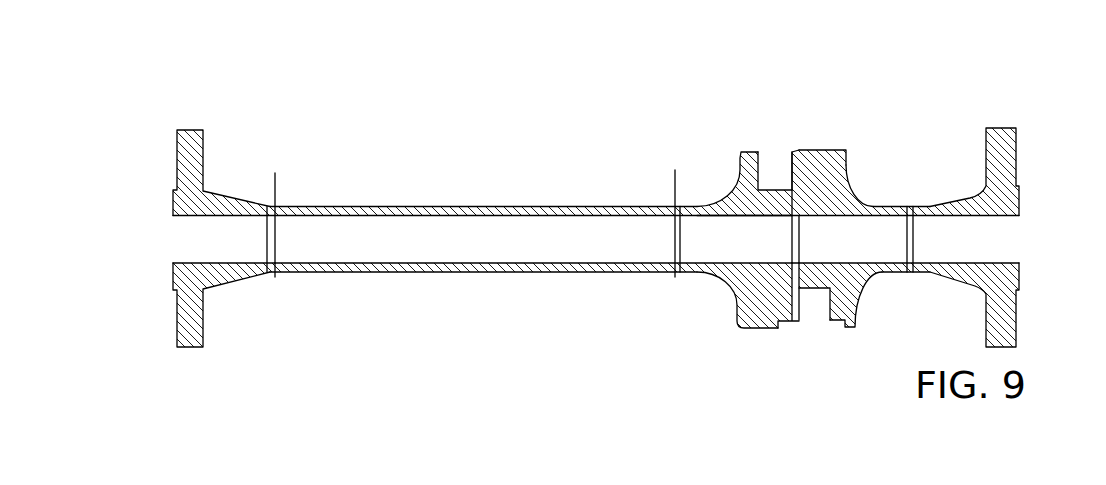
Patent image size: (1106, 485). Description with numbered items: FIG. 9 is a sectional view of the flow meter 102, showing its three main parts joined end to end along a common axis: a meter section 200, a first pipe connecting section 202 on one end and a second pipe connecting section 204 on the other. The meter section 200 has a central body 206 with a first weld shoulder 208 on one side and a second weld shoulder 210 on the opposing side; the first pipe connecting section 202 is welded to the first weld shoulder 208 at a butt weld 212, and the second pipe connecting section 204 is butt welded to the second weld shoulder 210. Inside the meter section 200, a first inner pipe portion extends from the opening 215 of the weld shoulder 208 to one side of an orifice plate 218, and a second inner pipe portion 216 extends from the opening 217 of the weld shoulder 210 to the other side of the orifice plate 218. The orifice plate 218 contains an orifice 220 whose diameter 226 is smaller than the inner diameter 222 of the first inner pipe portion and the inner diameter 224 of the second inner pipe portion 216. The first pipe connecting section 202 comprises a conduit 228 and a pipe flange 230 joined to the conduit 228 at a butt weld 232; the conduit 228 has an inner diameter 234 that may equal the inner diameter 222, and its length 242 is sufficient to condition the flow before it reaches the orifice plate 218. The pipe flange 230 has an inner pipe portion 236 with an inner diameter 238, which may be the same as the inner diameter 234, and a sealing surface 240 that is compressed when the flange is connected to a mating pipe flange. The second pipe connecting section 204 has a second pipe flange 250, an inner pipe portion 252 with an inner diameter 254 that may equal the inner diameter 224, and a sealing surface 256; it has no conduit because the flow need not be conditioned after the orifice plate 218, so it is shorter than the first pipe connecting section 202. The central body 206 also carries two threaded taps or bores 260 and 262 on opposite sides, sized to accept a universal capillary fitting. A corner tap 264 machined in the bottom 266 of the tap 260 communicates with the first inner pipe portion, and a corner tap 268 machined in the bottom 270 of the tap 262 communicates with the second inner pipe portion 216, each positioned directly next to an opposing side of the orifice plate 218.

The flow meter 102 is at (378, 78).
The meter section 200 is at (825, 137).
The first pipe connecting section 202 is at (475, 281).
The second pipe connecting section 204 is at (968, 155).
The central body 206 is at (760, 329).
The first weld shoulder 208 is at (699, 204).
The second weld shoulder 210 is at (897, 273).
The butt weld 212 is at (680, 277).
The opening 215 is at (674, 243).
The second inner pipe portion 216 is at (872, 206).
The opening 217 is at (916, 235).
The orifice plate 218 is at (799, 216).
The orifice 220 is at (796, 236).
The inner diameter 222 is at (713, 216).
The inner diameter 224 is at (884, 216).
The diameter 226 is at (799, 263).
The conduit 228 is at (383, 273).
The pipe flange 230 is at (192, 126).
The butt weld 232 is at (270, 273).
The inner diameter 234 is at (482, 216).
The inner pipe portion 236 is at (202, 223).
The inner diameter 238 is at (234, 216).
The sealing surface 240 is at (173, 290).
The length 242 is at (275, 186).
The second pipe flange 250 is at (996, 128).
The inner pipe portion 252 is at (1019, 225).
The inner diameter 254 is at (985, 216).
The sealing surface 256 is at (1019, 273).
The threaded tap 260 is at (765, 160).
The threaded tap 262 is at (822, 314).
The corner tap 264 is at (823, 170).
The bottom 266 is at (781, 184).
The corner tap 268 is at (788, 283).
The bottom 270 is at (815, 291).